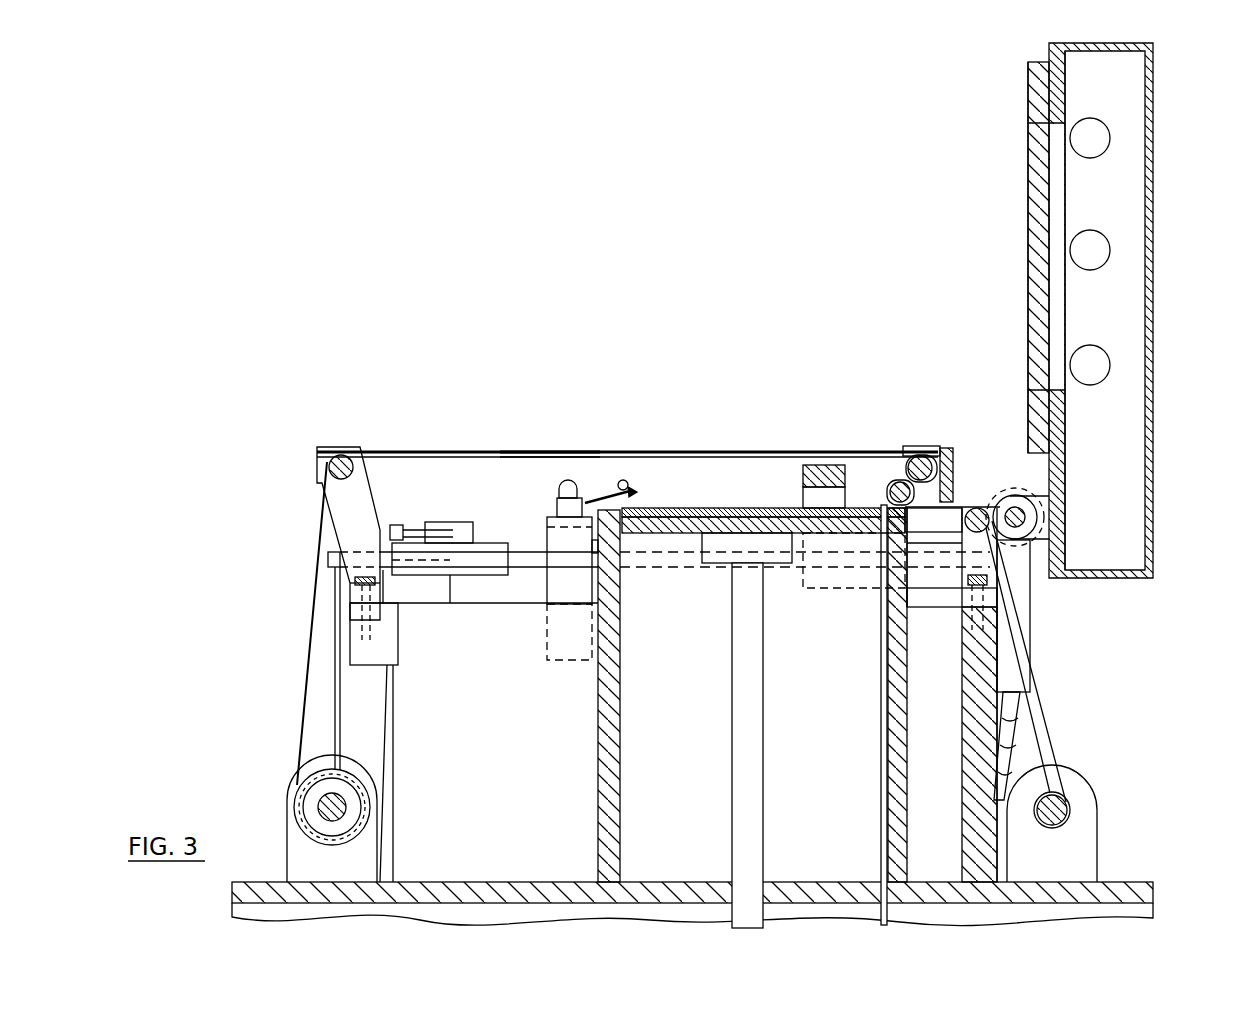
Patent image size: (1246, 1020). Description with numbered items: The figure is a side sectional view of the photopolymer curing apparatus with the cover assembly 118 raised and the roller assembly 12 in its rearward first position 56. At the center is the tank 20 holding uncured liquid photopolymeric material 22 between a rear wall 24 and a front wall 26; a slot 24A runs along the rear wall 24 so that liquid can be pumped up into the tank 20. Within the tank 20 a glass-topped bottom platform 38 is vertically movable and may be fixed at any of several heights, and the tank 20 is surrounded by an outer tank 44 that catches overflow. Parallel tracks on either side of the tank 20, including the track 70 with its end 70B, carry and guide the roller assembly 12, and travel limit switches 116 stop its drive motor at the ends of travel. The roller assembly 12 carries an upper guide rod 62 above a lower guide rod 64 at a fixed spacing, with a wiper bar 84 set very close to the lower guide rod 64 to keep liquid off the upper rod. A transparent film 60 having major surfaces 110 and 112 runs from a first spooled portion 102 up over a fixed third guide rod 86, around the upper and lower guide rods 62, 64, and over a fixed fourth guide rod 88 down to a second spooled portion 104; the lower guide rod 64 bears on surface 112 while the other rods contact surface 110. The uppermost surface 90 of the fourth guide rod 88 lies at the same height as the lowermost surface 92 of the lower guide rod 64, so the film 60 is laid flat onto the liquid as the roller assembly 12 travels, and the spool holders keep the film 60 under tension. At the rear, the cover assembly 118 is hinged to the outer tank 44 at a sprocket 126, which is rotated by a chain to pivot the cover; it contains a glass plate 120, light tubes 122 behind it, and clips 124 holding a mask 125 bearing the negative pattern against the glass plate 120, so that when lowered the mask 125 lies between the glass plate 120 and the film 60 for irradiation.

The roller assembly 12 is at (960, 444).
The tank 20 is at (640, 496).
The liquid photopolymeric material 22 is at (752, 506).
The rear wall 24 is at (908, 732).
The slot 24A is at (880, 680).
The front wall 26 is at (597, 705).
The bottom platform 38 is at (665, 535).
The outer tank 44 is at (442, 585).
The first position 56 is at (937, 440).
The film 60 is at (455, 451).
The upper guide rod 62 is at (920, 455).
The lower guide rod 64 is at (900, 482).
The track 70 is at (525, 552).
The end of track 70B is at (326, 560).
The wiper bar 84 is at (868, 494).
The third guide rod 86 is at (345, 456).
The fourth guide rod 88 is at (1005, 592).
The uppermost surface 90 is at (980, 506).
The lowermost surface 92 is at (868, 583).
The first spooled portion 102 is at (300, 783).
The second spooled portion 104 is at (1072, 806).
The major surface of film 110 is at (560, 458).
The major surface of film 112 is at (537, 451).
The travel limit switches 116 is at (425, 527).
The cover assembly 118 is at (1158, 262).
The glass plate 120 is at (1058, 197).
The light tubes 122 is at (1092, 118).
The clips 124 is at (1030, 110).
The mask 125 is at (1028, 208).
The sprocket 126 is at (1032, 500).